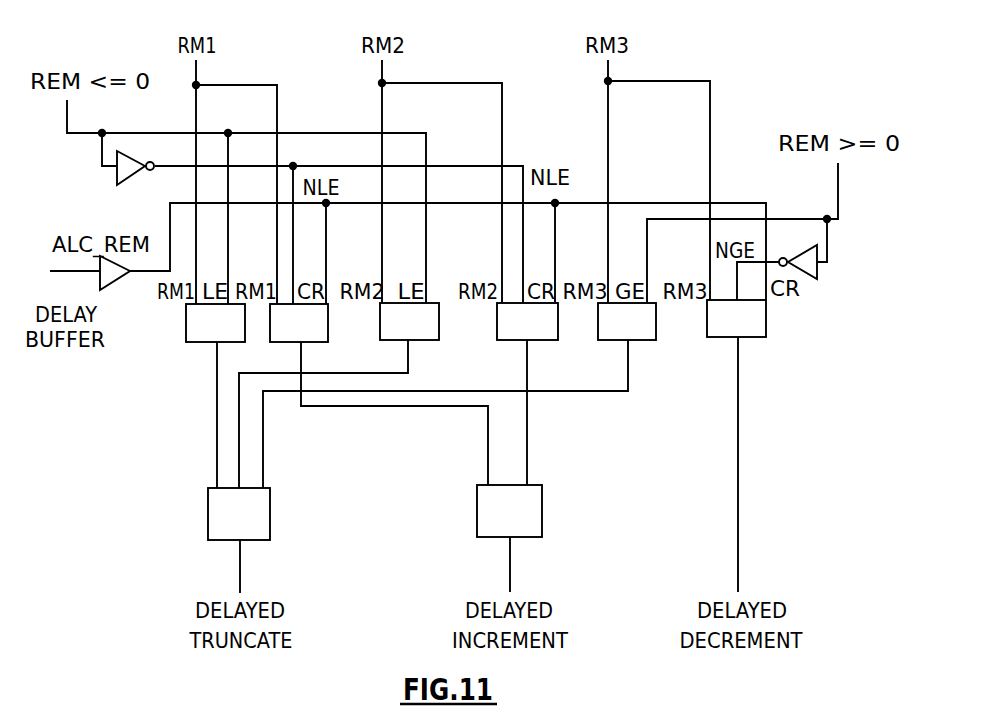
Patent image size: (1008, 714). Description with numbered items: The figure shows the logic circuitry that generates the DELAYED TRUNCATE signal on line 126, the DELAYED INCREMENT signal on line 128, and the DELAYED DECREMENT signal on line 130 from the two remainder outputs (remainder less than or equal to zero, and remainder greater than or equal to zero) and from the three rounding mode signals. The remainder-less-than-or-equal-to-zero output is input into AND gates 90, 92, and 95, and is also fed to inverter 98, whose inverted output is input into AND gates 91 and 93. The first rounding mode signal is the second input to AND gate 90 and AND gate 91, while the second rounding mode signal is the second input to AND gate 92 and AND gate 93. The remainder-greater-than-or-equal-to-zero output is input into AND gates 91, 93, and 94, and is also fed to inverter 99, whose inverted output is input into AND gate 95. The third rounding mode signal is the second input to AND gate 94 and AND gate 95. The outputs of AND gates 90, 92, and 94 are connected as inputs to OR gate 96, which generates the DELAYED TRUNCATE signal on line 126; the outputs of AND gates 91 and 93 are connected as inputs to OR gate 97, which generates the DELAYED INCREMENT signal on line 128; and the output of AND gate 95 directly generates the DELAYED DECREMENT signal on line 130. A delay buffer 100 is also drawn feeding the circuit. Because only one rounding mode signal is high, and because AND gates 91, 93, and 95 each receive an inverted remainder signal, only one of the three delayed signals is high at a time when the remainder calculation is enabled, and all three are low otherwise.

The AND gate 90 is at (205, 343).
The AND gate 91 is at (318, 343).
The AND gate 92 is at (417, 341).
The AND gate 93 is at (538, 341).
The AND gate 94 is at (640, 341).
The AND gate 95 is at (757, 338).
The OR gate 96 is at (208, 508).
The OR gate 97 is at (542, 498).
The inverter 98 is at (126, 180).
The inverter 99 is at (804, 278).
The delay buffer 100 is at (101, 288).
The line 126 is at (240, 563).
The line 128 is at (510, 560).
The line 130 is at (739, 560).